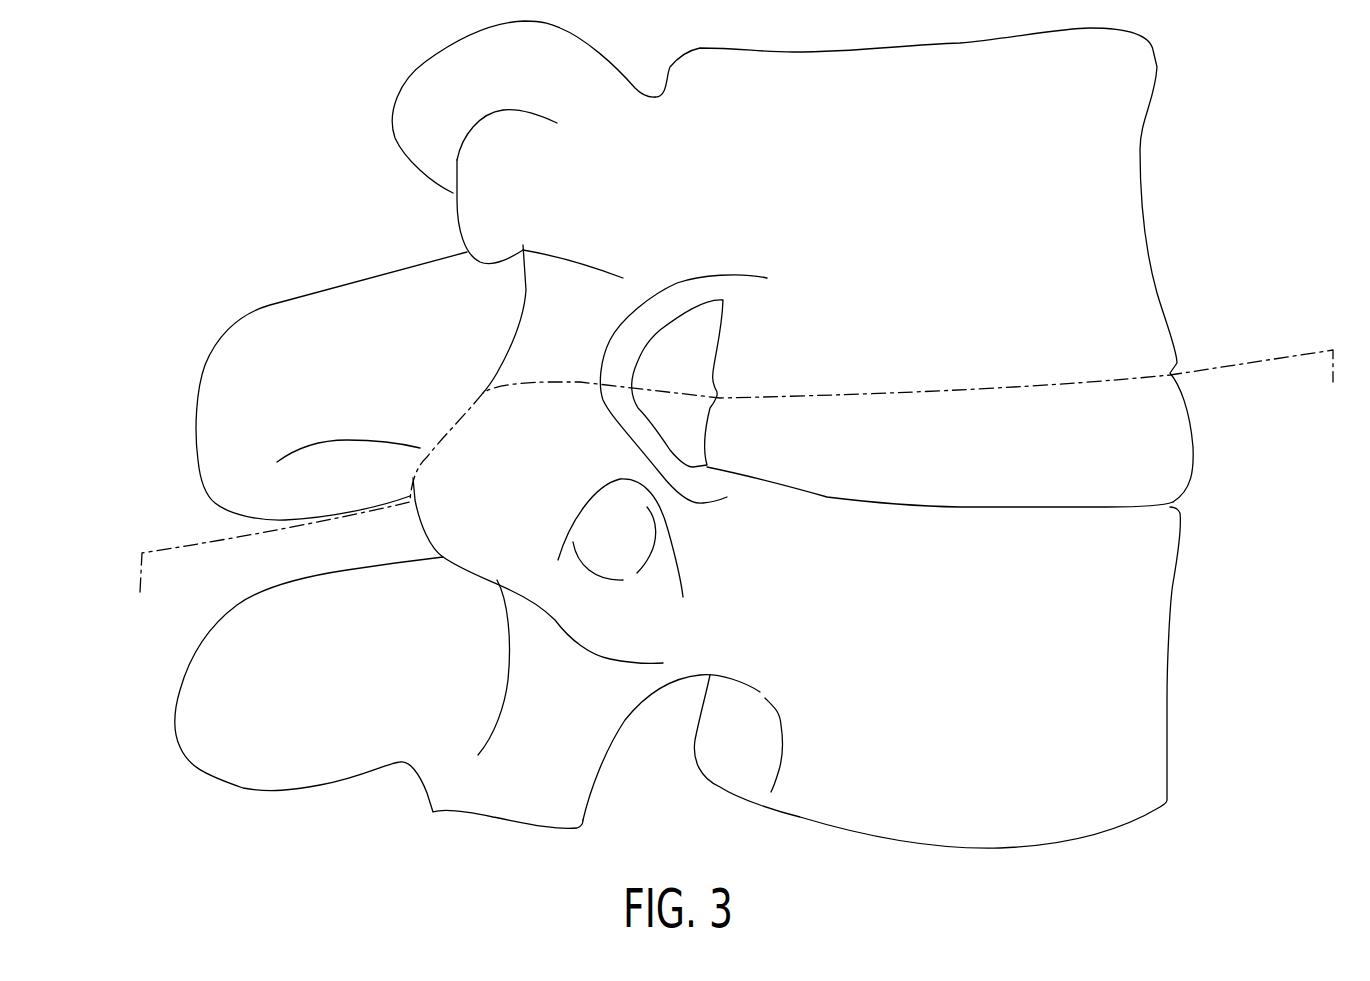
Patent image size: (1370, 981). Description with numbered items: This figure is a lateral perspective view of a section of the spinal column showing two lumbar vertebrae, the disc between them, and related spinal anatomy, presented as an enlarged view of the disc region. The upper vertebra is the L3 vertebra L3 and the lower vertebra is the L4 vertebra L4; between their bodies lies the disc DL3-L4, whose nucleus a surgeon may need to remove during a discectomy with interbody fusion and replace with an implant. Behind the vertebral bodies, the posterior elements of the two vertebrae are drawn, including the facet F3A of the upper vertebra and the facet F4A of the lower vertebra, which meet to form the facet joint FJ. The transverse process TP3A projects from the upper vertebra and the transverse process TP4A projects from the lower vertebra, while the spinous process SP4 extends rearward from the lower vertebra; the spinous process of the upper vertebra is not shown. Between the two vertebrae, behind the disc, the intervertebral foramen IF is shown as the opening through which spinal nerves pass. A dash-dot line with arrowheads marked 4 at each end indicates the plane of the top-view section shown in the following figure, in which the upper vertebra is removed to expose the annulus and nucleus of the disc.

The facet F3A is at (452, 73).
The transverse process TP3A is at (473, 163).
The L3 vertebra L3 is at (1123, 217).
The disc DL3-L4 is at (1173, 447).
The intervertebral foramen IF is at (659, 360).
The facet joint FJ is at (480, 377).
The facet F4A is at (450, 503).
The transverse process TP4A is at (607, 543).
The L4 vertebra L4 is at (1148, 623).
The spinous process SP4 is at (198, 717).
The section line 4 is at (736, 507).